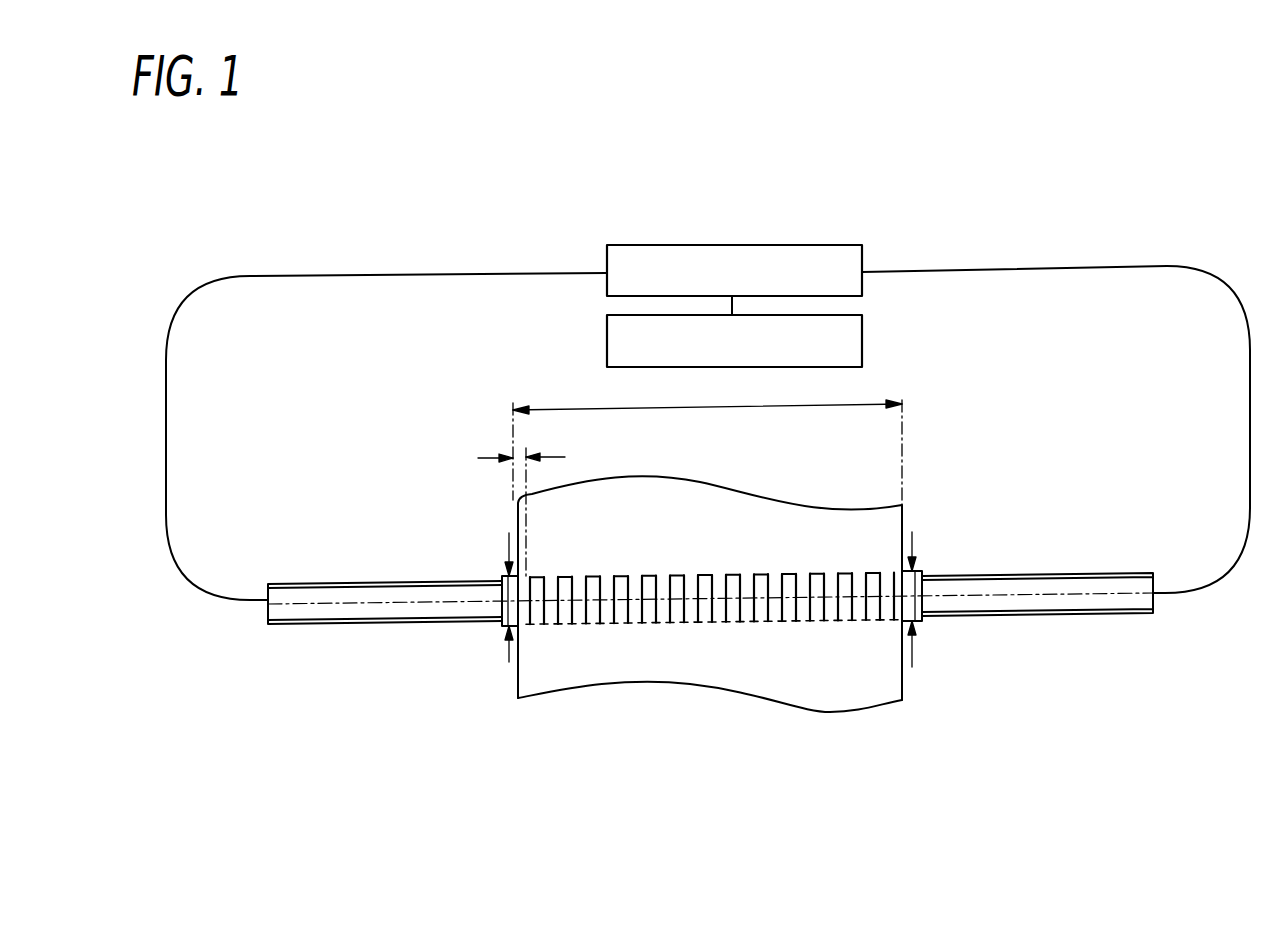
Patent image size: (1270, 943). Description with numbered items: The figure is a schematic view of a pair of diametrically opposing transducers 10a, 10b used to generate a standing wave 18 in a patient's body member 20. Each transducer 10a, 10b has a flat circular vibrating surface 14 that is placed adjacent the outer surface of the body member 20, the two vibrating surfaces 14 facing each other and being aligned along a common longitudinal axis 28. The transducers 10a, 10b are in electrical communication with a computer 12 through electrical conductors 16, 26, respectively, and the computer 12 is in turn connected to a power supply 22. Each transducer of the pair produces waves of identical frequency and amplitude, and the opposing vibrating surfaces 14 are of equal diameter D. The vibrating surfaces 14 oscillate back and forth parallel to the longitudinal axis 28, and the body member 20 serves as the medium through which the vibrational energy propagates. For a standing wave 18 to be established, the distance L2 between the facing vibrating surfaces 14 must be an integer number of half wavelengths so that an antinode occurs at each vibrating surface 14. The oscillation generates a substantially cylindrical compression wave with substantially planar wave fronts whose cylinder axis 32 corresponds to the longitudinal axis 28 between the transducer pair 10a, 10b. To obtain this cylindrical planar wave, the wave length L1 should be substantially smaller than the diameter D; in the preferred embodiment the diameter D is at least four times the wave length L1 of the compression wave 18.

The transducer 10a is at (383, 610).
The transducer 10b is at (1067, 600).
The computer 12 is at (843, 245).
The vibrating surface 14 is at (505, 595).
The electrical conductor 16 is at (437, 275).
The standing wave 18 is at (712, 671).
The body member 20 is at (853, 697).
The power supply 22 is at (862, 338).
The electrical conductor 26 is at (1100, 266).
The longitudinal axis 28 is at (807, 598).
The cylinder axis 32 is at (723, 622).
The diameter D is at (509, 660).
The wave length L1 is at (539, 509).
The distance L2 is at (707, 440).